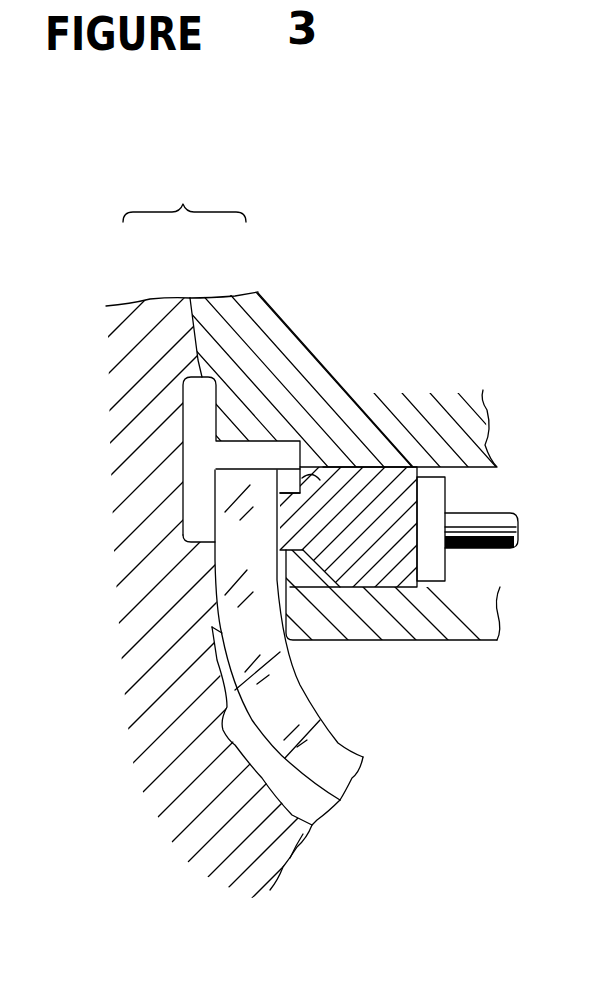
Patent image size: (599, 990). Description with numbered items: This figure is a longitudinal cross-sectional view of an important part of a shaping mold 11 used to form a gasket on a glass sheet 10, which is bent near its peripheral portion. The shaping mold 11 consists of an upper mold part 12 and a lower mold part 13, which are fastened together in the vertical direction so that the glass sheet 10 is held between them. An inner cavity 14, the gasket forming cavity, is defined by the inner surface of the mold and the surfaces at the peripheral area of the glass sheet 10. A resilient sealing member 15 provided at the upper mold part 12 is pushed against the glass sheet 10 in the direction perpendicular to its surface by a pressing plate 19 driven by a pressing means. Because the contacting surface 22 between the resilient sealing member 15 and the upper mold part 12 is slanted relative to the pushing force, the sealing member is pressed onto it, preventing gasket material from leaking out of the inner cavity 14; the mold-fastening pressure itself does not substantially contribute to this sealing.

The glass sheet 10 is at (318, 760).
The shaping mold 11 is at (184, 194).
The upper mold part 12 is at (228, 330).
The lower mold part 13 is at (147, 318).
The inner cavity 14 is at (275, 455).
The resilient sealing member 15 is at (380, 547).
The pressing plate 19 is at (430, 497).
The contacting surface 22 is at (312, 488).